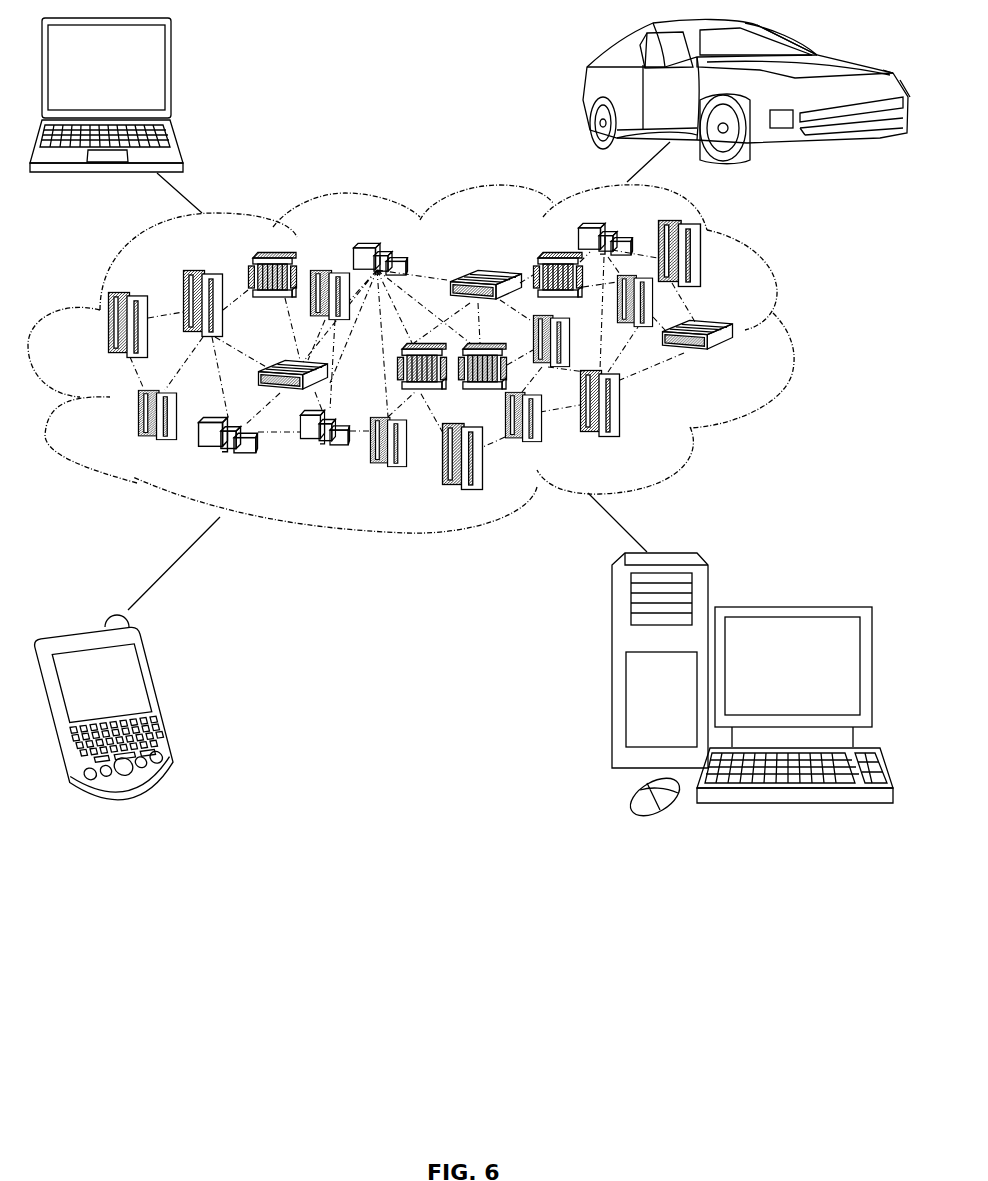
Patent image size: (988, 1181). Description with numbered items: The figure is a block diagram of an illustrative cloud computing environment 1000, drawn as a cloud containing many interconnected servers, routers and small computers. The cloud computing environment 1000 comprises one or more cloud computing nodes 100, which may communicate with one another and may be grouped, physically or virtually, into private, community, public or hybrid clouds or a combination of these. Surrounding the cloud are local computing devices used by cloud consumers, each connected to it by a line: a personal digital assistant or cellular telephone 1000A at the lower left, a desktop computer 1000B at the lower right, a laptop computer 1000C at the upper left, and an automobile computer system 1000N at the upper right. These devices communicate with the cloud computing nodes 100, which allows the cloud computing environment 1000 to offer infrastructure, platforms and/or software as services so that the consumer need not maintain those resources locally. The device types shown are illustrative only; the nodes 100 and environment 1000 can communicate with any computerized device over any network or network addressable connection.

The laptop computer 1000C is at (172, 78).
The automobile computer system 1000N is at (584, 97).
The cloud computing environment 1000 is at (793, 337).
The cloud computing nodes 100 is at (748, 365).
The personal digital assistant (PDA) or cellular telephone 1000A is at (162, 697).
The desktop computer 1000B is at (791, 607).